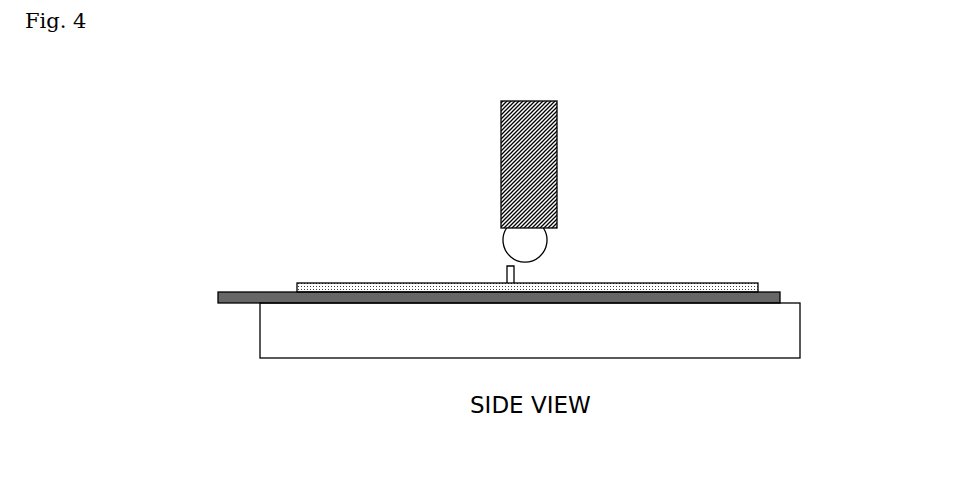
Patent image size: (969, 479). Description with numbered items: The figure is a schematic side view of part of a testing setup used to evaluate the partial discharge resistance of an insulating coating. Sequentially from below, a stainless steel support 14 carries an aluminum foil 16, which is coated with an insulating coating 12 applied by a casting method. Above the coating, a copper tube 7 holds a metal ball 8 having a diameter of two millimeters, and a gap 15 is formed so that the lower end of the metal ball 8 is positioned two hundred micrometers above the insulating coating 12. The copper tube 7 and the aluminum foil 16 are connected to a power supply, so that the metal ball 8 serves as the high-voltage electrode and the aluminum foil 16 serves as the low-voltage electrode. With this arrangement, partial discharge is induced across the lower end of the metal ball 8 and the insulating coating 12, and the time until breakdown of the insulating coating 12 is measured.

The copper tube 7 is at (550, 137).
The metal ball 8 is at (540, 240).
The gap 15 is at (508, 275).
The insulating coating 12 is at (700, 288).
The aluminum foil 16 is at (283, 292).
The stainless steel support 14 is at (478, 353).